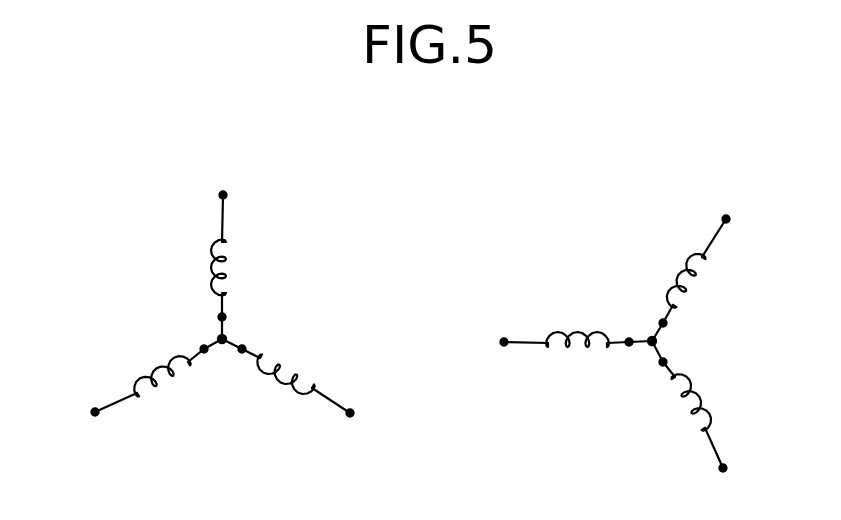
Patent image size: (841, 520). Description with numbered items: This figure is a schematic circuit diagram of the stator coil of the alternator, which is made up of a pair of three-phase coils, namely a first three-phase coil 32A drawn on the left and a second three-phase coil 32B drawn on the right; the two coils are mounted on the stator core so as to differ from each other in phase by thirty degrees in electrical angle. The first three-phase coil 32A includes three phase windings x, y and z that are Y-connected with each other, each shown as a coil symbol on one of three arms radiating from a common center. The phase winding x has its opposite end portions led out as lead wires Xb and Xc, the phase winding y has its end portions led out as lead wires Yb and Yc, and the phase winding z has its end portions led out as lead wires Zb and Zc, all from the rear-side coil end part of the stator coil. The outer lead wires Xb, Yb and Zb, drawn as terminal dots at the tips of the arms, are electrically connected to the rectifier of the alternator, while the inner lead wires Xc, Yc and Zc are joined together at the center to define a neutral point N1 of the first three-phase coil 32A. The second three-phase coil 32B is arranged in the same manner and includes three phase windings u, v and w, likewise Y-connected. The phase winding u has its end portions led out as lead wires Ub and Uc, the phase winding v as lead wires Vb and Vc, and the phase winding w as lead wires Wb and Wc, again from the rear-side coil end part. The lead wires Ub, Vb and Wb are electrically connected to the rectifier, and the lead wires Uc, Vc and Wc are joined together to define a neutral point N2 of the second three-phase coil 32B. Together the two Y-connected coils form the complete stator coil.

The first three-phase coil 32A is at (292, 184).
The second three-phase coil 32B is at (652, 222).
The neutral point N1 is at (233, 330).
The neutral point N2 is at (658, 340).
The lead wire Xb is at (224, 204).
The lead wire Xc is at (219, 315).
The lead wire Yb is at (92, 409).
The lead wire Yc is at (204, 353).
The lead wire Zb is at (353, 411).
The lead wire Zc is at (246, 347).
The lead wire Ub is at (725, 224).
The lead wire Uc is at (665, 321).
The lead wire Vb is at (502, 343).
The lead wire Vc is at (628, 338).
The lead wire Wb is at (727, 463).
The lead wire Wc is at (661, 365).
The phase winding x is at (208, 278).
The phase winding y is at (169, 369).
The phase winding z is at (278, 378).
The phase winding u is at (680, 288).
The phase winding v is at (587, 355).
The phase winding w is at (694, 396).